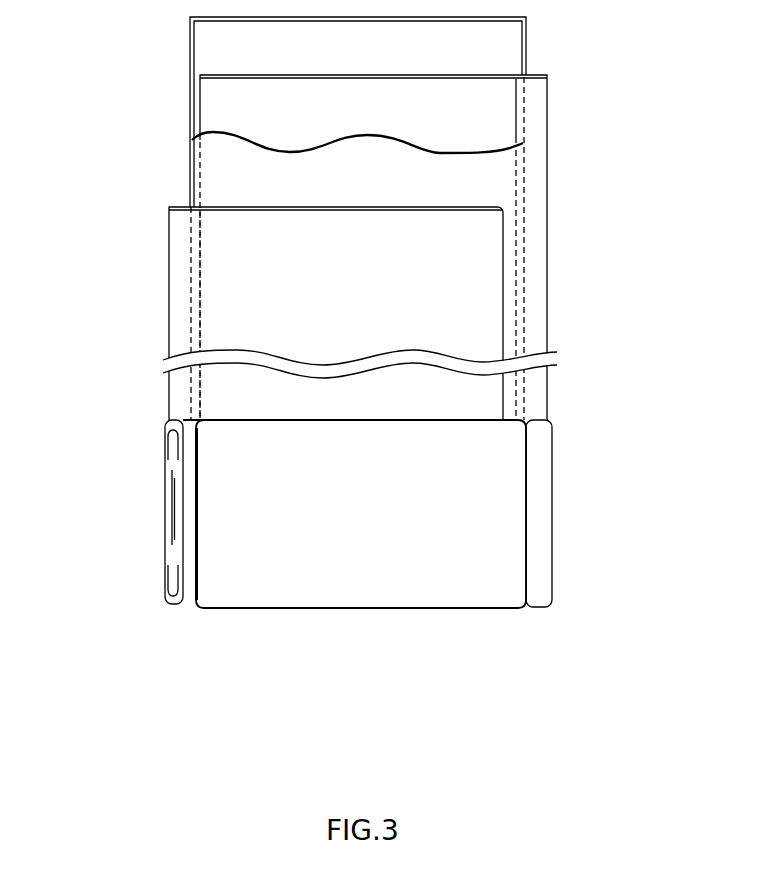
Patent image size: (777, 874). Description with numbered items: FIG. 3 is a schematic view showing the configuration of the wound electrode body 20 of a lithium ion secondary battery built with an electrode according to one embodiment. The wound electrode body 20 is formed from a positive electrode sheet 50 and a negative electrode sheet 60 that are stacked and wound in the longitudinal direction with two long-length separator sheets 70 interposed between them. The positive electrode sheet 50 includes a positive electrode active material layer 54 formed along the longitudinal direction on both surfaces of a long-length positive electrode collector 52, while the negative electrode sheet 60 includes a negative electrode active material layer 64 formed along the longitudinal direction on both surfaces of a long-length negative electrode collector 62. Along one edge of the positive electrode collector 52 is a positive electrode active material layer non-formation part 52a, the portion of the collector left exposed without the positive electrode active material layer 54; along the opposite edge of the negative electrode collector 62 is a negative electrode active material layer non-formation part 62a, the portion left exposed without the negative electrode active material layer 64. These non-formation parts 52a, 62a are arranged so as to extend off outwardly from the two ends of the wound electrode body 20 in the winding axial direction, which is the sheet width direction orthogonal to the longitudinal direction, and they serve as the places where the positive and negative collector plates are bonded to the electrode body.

The wound electrode body 20 is at (419, 590).
The positive electrode sheet 50 is at (270, 405).
The positive electrode collector 52 is at (165, 346).
The positive electrode active material layer non-formation part 52a is at (187, 505).
The positive electrode active material layer 54 is at (233, 222).
The negative electrode sheet 60 is at (430, 339).
The negative electrode collector 62 is at (548, 254).
The negative electrode active material layer non-formation part 62a is at (533, 223).
The negative electrode active material layer 64 is at (512, 100).
The separator sheet 70 is at (213, 40).